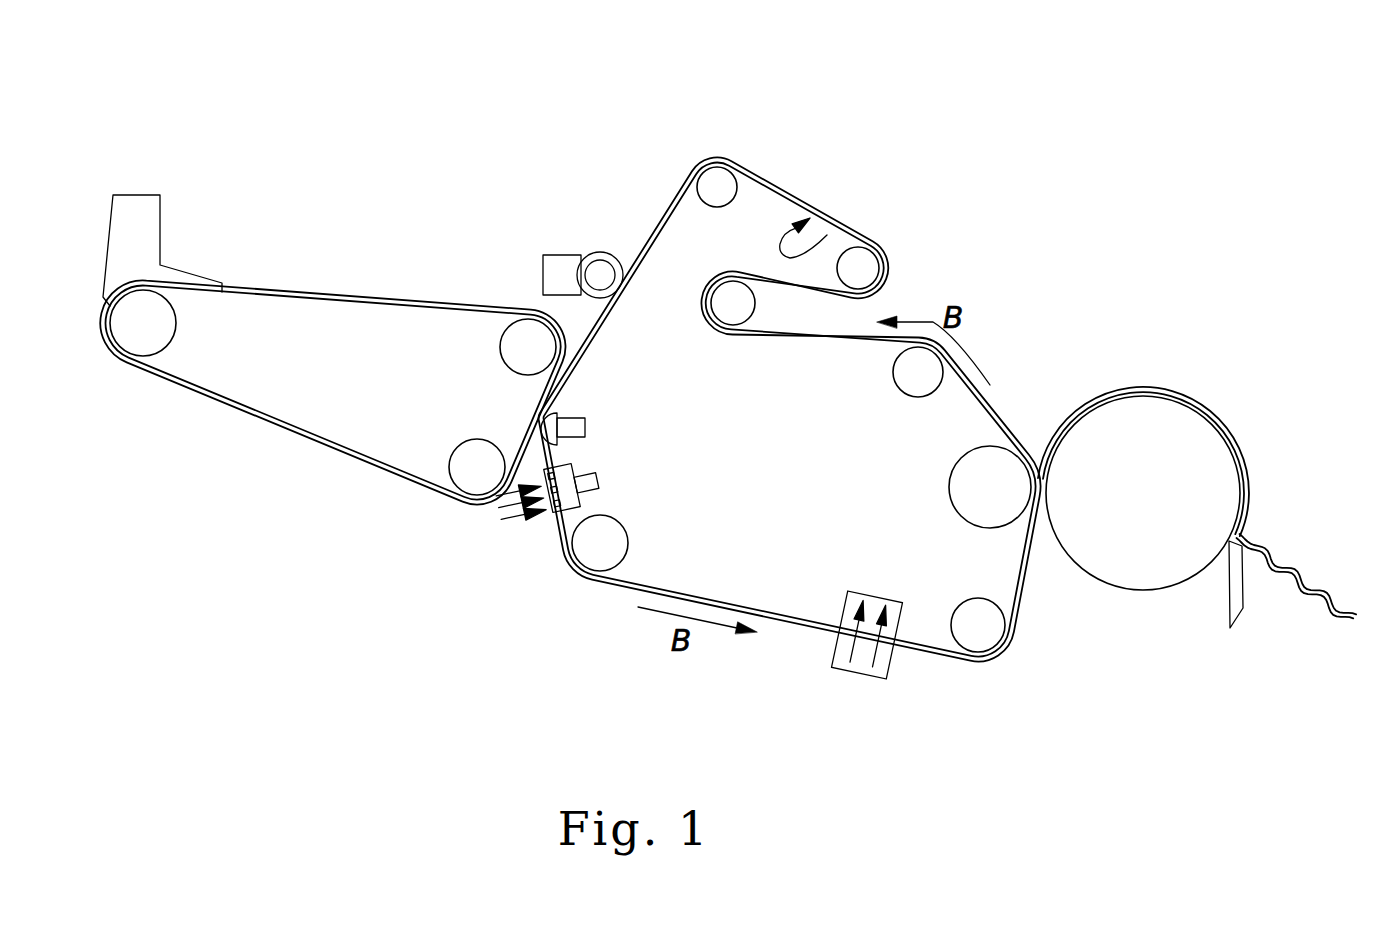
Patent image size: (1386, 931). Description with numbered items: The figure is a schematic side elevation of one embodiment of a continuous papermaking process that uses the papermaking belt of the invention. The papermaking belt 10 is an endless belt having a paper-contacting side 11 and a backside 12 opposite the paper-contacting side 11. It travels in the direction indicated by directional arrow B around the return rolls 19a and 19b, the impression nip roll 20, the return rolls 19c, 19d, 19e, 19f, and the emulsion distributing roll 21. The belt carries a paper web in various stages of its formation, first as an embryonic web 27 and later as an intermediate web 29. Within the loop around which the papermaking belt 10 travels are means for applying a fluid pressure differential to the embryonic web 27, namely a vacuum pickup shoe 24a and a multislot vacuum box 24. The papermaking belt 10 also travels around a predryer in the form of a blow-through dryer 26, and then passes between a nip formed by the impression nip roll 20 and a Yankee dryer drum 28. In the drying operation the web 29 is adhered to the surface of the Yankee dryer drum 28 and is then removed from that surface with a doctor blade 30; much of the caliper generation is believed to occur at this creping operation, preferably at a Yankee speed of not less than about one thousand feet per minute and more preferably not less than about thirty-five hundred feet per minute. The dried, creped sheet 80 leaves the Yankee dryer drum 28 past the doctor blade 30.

The papermaking belt 10 is at (638, 207).
The paper-contacting side 11 is at (805, 170).
The backside 12 is at (827, 235).
The return roll 19a is at (593, 537).
The return roll 19b is at (968, 622).
The return roll 19c is at (908, 382).
The return roll 19d is at (737, 305).
The return roll 19e is at (857, 272).
The return roll 19f is at (712, 182).
The impression nip roll 20 is at (985, 513).
The emulsion distributing roll 21 is at (558, 273).
The multislot vacuum box 24 is at (590, 482).
The vacuum pickup shoe 24a is at (579, 422).
The blow-through dryer 26 is at (847, 675).
The embryonic web 27 is at (378, 296).
The Yankee dryer drum 28 is at (1155, 517).
The intermediate web 29 is at (1225, 430).
The doctor blade 30 is at (1237, 612).
The output sheet 80 is at (1297, 577).